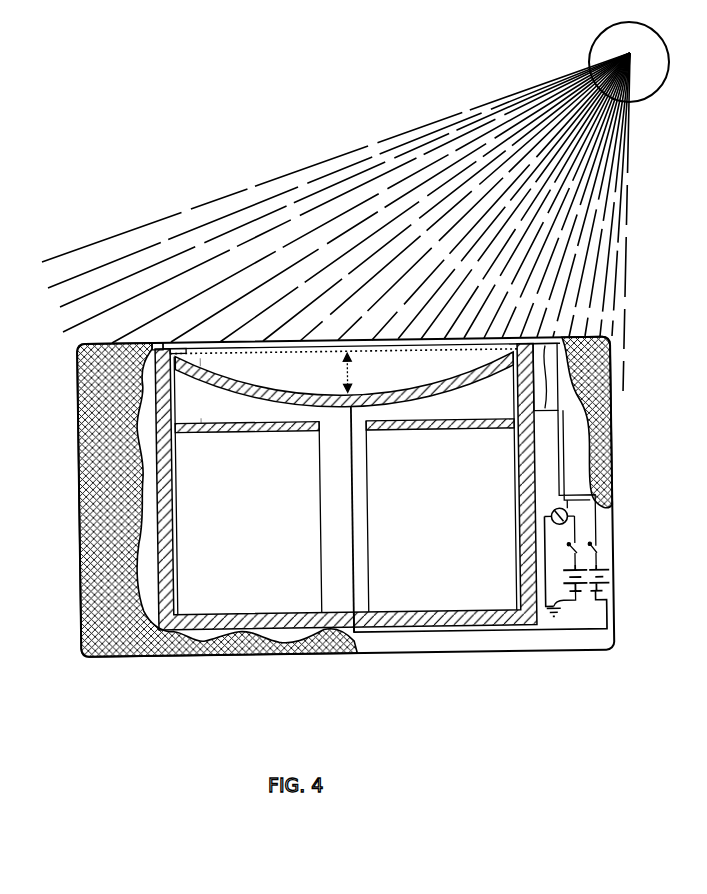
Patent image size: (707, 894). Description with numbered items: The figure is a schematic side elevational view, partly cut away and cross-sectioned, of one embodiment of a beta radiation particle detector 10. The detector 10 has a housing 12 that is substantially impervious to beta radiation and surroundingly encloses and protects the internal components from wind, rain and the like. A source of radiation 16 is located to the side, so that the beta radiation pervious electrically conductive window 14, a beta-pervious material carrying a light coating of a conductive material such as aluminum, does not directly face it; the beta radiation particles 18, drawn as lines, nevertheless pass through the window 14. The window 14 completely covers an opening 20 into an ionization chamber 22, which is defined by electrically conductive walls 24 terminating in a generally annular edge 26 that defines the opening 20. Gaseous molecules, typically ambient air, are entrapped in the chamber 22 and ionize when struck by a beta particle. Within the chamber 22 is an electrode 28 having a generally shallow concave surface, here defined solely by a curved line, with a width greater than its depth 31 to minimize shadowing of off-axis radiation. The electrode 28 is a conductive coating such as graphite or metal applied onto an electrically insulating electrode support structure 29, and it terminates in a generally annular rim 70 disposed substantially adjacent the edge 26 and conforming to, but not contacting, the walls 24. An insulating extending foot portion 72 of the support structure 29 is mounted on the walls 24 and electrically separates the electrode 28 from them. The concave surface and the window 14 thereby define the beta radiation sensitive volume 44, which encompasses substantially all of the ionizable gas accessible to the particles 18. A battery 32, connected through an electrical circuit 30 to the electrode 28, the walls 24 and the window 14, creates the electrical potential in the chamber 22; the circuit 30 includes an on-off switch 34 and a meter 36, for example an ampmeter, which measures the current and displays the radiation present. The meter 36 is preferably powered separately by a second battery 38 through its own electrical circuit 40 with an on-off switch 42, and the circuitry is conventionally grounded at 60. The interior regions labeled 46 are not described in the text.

The beta radiation particle detector 10 is at (70, 471).
The housing 12 is at (78, 532).
The beta radiation pervious electrically conductive window 14 is at (292, 343).
The source of radiation 16 is at (613, 51).
The beta radiation particles 18 is at (345, 151).
The opening 20 is at (318, 356).
The ionization chamber 22 is at (226, 510).
The electrically conductive walls 24 is at (171, 562).
The annular edge 26 is at (166, 345).
The electrode 28 is at (420, 388).
The electrode support structure 29 is at (226, 358).
The electrical circuit 30 is at (540, 343).
The depth 31 is at (350, 373).
The battery 32 is at (606, 592).
The on-off switch 34 is at (598, 563).
The meter 36 is at (577, 532).
The second battery 38 is at (606, 620).
The electrical circuit 40 is at (573, 607).
The on-off switch 42 is at (592, 545).
The beta radiation sensitive volume 44 is at (299, 380).
The cell interior 46 is at (234, 565).
The ground 60 is at (552, 627).
The annular rim 70 is at (186, 348).
The extending foot portion 72 is at (358, 604).